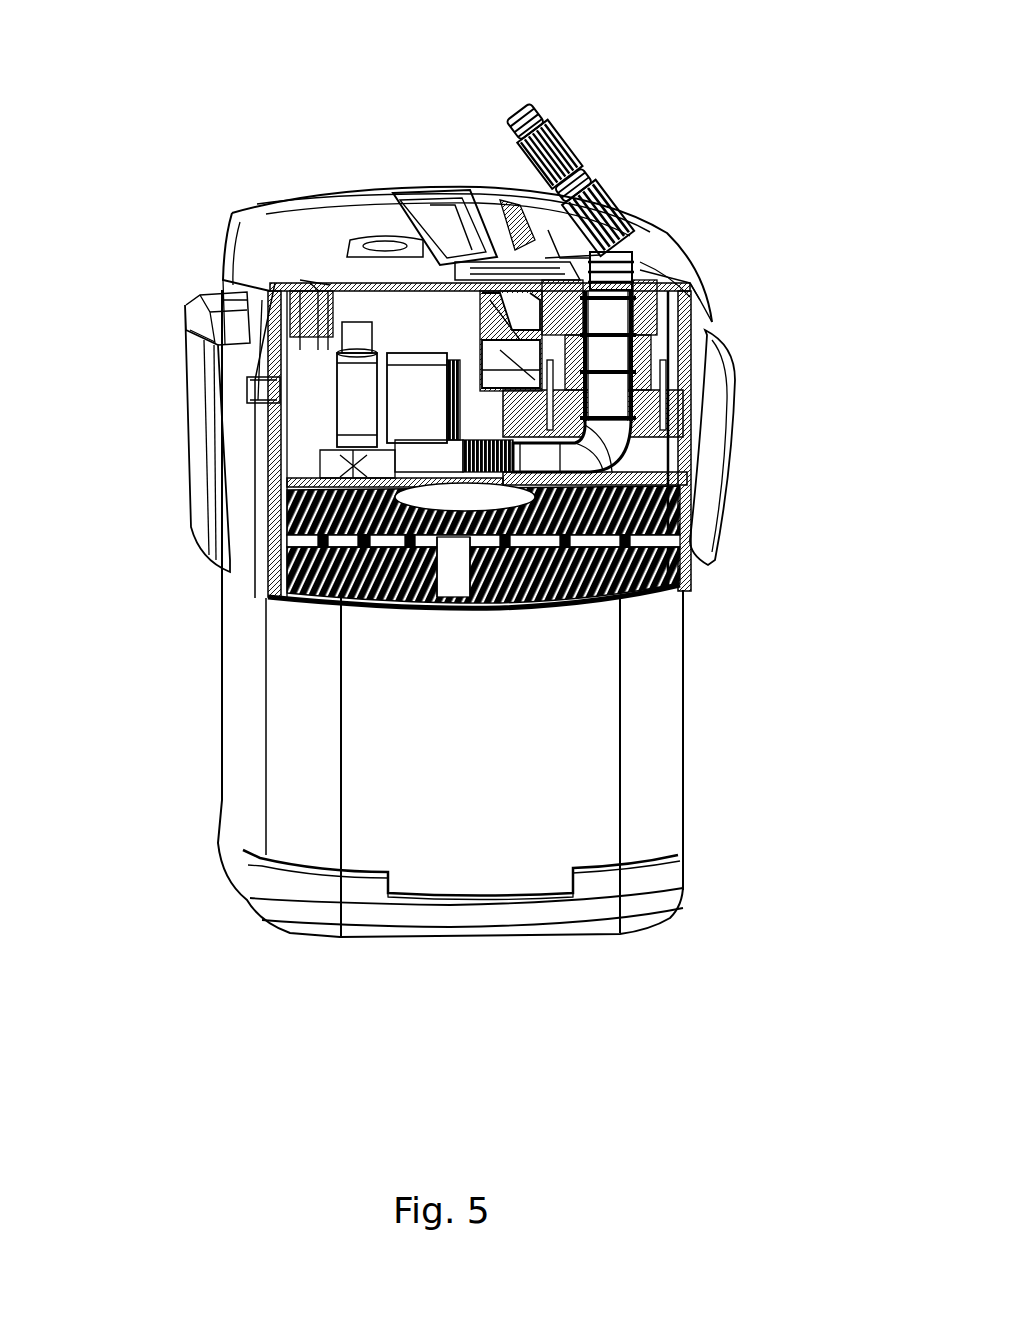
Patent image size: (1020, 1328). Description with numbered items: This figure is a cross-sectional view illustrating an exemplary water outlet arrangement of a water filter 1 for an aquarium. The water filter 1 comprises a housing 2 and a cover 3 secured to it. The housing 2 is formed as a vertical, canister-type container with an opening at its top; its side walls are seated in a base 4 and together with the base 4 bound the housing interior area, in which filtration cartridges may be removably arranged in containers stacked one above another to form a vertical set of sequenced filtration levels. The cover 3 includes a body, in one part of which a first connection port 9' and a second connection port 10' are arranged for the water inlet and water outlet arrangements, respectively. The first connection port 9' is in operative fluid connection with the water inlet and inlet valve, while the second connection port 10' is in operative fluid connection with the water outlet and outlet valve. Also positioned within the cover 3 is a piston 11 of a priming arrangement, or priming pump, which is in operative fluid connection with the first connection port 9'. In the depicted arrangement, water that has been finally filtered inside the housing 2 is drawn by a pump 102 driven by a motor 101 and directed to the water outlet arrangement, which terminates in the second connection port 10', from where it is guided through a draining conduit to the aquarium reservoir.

The water filter 1 is at (213, 168).
The housing 2 is at (710, 778).
The cover 3 is at (726, 228).
The base 4 is at (583, 914).
The first connection port 9' is at (490, 102).
The second connection port 10' is at (642, 188).
The piston 11 is at (455, 195).
The motor 101 is at (215, 345).
The pump 102 is at (340, 432).